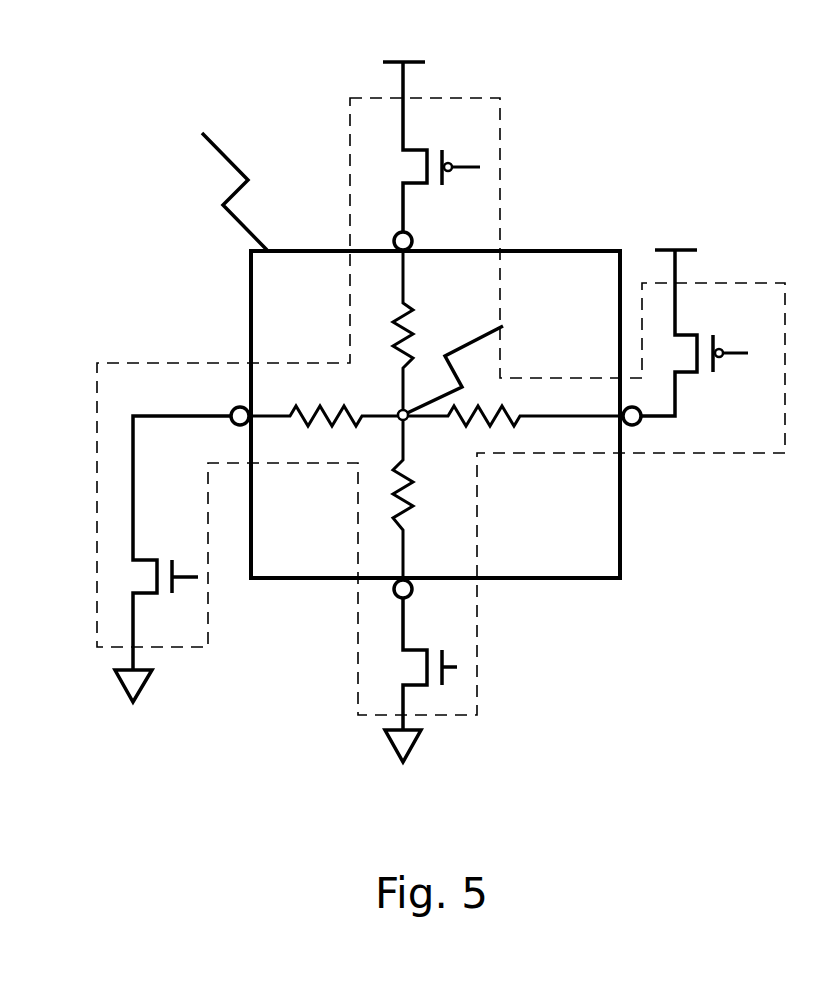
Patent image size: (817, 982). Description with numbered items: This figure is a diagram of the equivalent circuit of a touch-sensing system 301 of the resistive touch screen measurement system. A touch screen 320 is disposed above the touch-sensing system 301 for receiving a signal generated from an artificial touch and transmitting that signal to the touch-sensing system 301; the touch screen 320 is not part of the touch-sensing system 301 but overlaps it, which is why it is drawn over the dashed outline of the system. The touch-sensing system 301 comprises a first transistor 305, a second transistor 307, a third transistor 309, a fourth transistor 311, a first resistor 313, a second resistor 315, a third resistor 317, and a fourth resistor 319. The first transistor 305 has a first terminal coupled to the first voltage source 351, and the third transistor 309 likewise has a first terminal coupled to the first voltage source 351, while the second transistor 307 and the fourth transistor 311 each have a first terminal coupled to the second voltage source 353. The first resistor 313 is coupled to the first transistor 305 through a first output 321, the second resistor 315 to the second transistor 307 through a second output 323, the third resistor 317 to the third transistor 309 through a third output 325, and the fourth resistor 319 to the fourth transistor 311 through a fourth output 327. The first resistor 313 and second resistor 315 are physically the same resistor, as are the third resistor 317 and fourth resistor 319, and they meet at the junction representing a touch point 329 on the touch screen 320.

The touch-sensing system 301 is at (768, 282).
The first transistor 305 is at (421, 147).
The second transistor 307 is at (410, 664).
The third transistor 309 is at (694, 333).
The fourth transistor 311 is at (165, 543).
The first resistor 313 is at (426, 330).
The second resistor 315 is at (427, 499).
The third resistor 317 is at (513, 429).
The fourth resistor 319 is at (325, 434).
The touch screen 320 is at (225, 158).
The first output 321 is at (412, 241).
The second output 323 is at (412, 589).
The third output 325 is at (636, 424).
The fourth output 327 is at (234, 422).
The touch point 329 is at (475, 340).
The first voltage source 351 is at (411, 62).
The second voltage source 353 is at (143, 688).